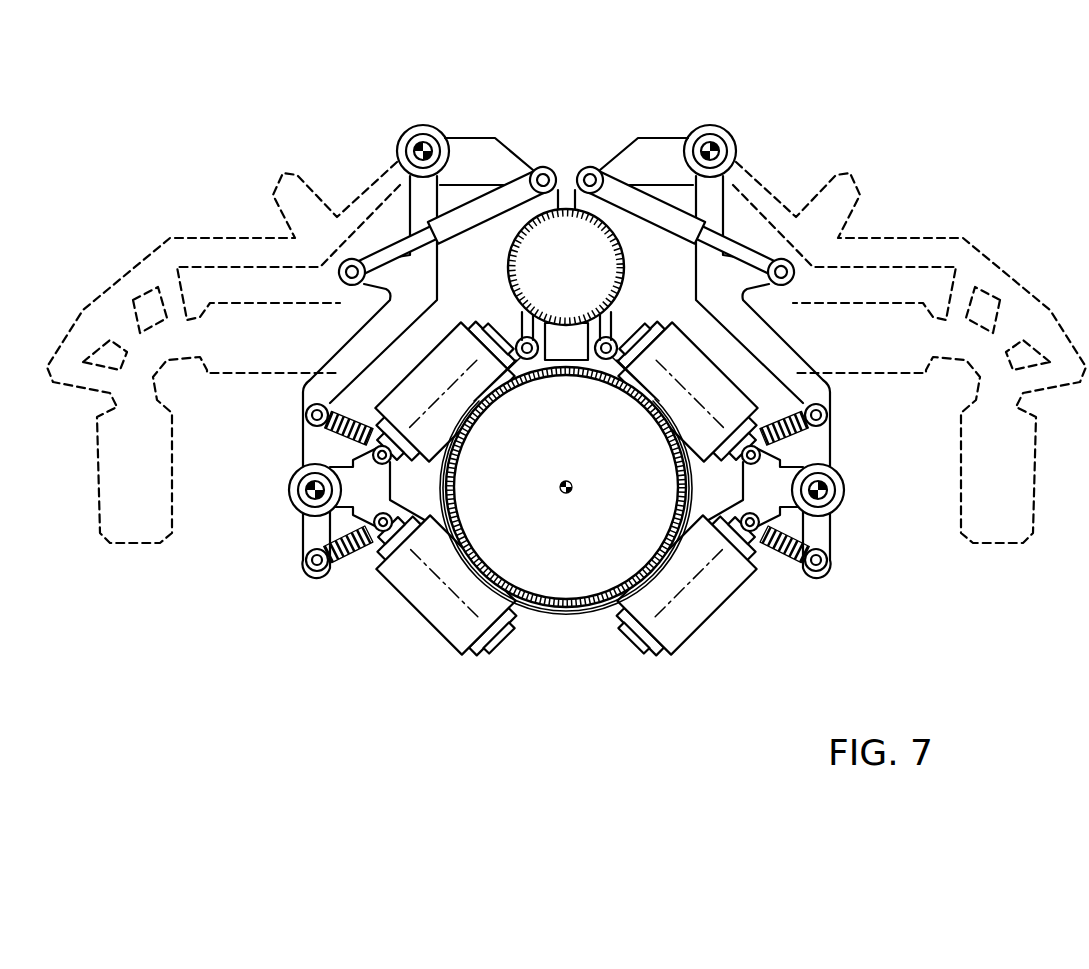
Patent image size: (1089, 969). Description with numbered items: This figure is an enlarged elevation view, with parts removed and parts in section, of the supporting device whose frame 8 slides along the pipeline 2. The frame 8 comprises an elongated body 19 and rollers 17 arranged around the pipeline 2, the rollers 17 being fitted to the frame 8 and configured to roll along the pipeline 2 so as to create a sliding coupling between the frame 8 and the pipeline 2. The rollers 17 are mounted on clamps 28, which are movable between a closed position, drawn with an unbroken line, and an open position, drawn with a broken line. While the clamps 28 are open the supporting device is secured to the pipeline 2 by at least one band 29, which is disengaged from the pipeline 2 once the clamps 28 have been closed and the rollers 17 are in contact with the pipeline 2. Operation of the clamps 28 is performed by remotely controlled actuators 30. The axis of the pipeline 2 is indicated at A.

The pipeline 2 is at (562, 607).
The frame 8 is at (797, 112).
The rollers 17 is at (445, 358).
The elongated body 19 is at (566, 181).
The clamps 28 is at (233, 258).
The band 29 is at (497, 392).
The actuators 30 is at (482, 205).
The axis A is at (578, 472).